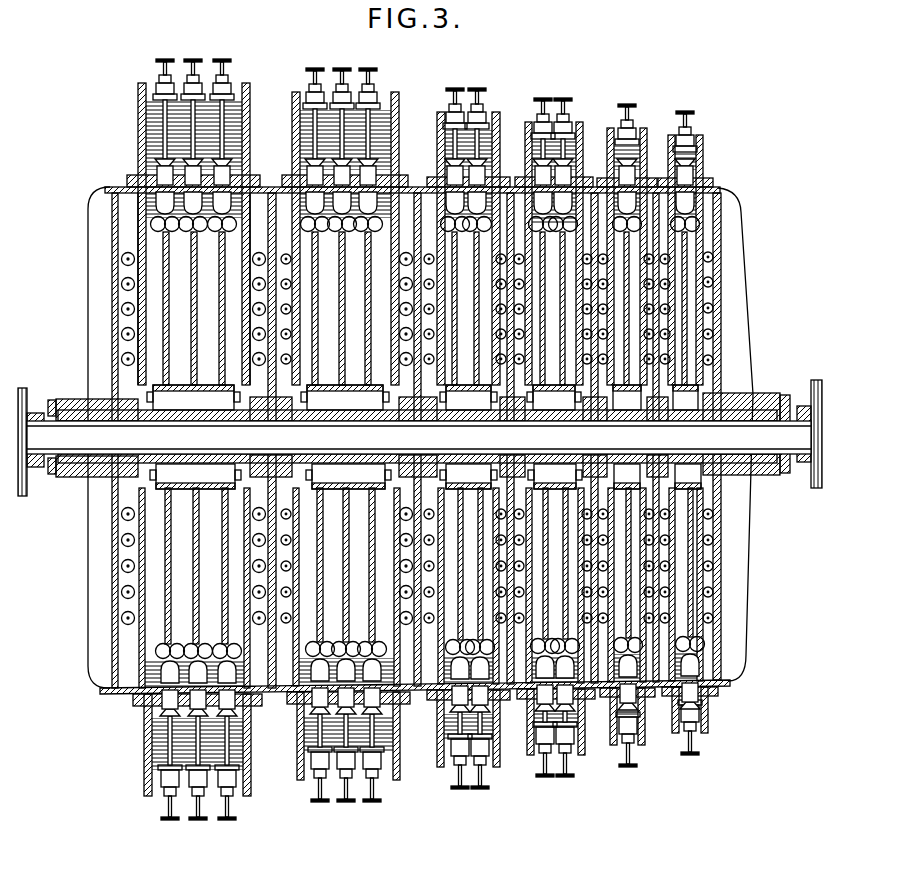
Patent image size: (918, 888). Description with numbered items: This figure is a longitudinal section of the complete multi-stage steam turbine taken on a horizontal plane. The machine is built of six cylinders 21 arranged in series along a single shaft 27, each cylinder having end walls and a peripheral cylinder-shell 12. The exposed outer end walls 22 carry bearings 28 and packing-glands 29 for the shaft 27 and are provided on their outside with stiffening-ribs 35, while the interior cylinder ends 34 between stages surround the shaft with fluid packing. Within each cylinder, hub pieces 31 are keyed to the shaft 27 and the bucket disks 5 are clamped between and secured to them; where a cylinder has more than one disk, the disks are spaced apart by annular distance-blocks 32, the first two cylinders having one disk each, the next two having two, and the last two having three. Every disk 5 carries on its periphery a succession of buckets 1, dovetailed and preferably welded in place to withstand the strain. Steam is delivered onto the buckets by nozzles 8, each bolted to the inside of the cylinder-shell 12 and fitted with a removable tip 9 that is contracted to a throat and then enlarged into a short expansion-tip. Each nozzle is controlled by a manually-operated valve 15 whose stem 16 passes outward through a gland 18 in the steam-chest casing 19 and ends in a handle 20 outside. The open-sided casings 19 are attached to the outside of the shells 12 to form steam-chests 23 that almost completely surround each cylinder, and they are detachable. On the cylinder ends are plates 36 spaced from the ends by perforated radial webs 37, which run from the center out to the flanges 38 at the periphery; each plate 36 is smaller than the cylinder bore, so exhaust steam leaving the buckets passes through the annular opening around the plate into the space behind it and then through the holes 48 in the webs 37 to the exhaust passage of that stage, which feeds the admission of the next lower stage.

The bucket 1 is at (158, 226).
The disk 5 is at (197, 320).
The nozzle 8 is at (160, 200).
The removable tip 9 is at (165, 680).
The cylinder-shell 12 is at (150, 180).
The valve 15 is at (230, 164).
The stem 16 is at (224, 142).
The gland 18 is at (226, 88).
The steam-chest casing 19 is at (139, 118).
The handle 20 is at (223, 58).
The cylinder 21 is at (150, 586).
The end wall 22 is at (115, 510).
The steam-chest 23 is at (156, 146).
The shaft 27 is at (419, 437).
The bearing 28 is at (98, 398).
The packing-gland 29 is at (52, 400).
The hub piece 31 is at (155, 412).
The annular distance-block 32 is at (160, 472).
The interior cylinder end 34 is at (413, 342).
The stiffening-rib 35 is at (89, 292).
The plate 36 is at (243, 364).
The perforated radial web 37 is at (712, 265).
The flange 38 is at (258, 190).
The hole 48 is at (121, 311).